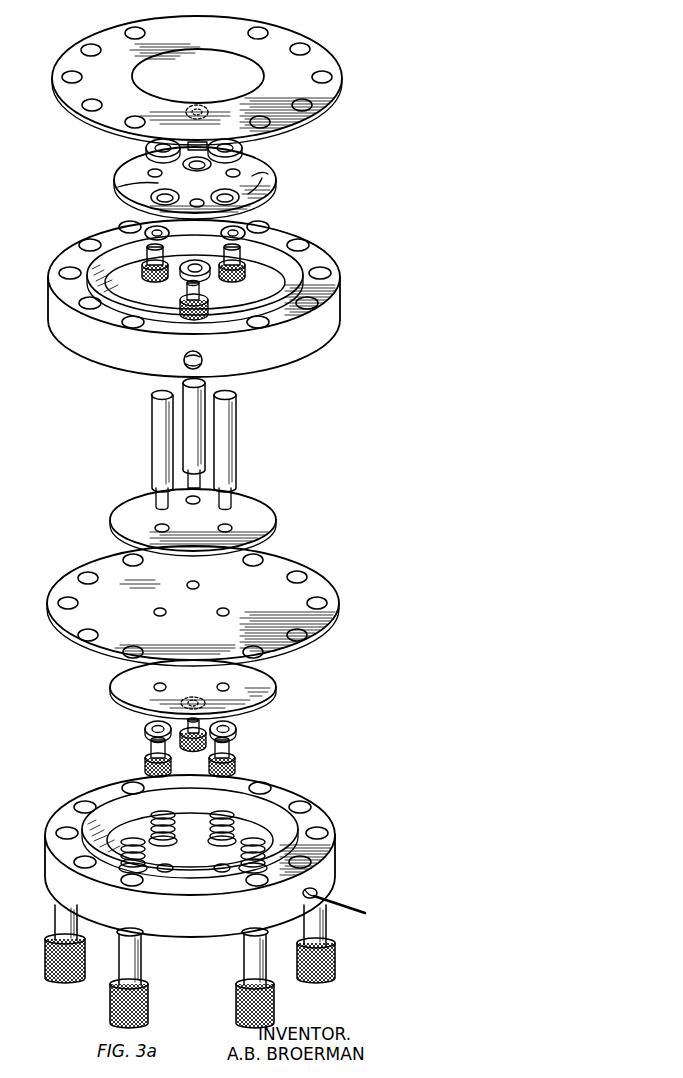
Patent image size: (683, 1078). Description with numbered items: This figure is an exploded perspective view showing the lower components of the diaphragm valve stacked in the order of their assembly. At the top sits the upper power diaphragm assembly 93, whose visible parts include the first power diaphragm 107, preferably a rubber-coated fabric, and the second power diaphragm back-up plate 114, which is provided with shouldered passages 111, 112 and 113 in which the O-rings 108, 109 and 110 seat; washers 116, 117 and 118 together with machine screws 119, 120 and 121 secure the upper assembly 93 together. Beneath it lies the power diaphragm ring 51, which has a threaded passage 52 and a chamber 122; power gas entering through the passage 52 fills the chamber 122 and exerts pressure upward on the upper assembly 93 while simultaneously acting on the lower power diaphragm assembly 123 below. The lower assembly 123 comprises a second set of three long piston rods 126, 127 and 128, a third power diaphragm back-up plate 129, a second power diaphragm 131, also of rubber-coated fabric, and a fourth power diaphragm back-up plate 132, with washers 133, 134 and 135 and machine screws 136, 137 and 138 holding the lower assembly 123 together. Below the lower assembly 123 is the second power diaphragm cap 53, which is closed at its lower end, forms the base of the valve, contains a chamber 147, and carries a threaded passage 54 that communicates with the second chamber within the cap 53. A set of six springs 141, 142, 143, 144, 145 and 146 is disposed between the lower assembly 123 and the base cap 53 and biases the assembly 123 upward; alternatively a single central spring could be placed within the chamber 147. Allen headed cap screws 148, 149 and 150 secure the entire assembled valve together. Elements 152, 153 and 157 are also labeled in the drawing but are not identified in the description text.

The upper power diaphragm assembly 93 is at (70, 42).
The first power diaphragm 107 is at (322, 114).
The O-ring 108 is at (146, 151).
The O-ring 109 is at (212, 84).
The O-ring 110 is at (243, 149).
The shouldered passage 111 is at (118, 185).
The shouldered passage 112 is at (219, 169).
The shouldered passage 113 is at (265, 178).
The second power diaphragm back-up plate 114 is at (276, 181).
The washer 116 is at (205, 240).
The washer 117 is at (148, 227).
The washer 118 is at (246, 229).
The machine screw 119 is at (202, 288).
The machine screw 120 is at (78, 245).
The machine screw 121 is at (310, 246).
The chamber 122 is at (165, 305).
The power diaphragm ring 51 is at (340, 288).
The threaded passage 52 is at (182, 359).
The lower power diaphragm assembly 123 is at (80, 557).
The long piston rod 126 is at (152, 408).
The long piston rod 127 is at (206, 389).
The long piston rod 128 is at (237, 413).
The third power diaphragm back-up plate 129 is at (277, 517).
The second power diaphragm 131 is at (335, 621).
The fourth power diaphragm back-up plate 132 is at (274, 682).
The washer 133 is at (146, 726).
The washer 134 is at (204, 677).
The washer 135 is at (236, 727).
The machine screw 136 is at (146, 764).
The machine screw 137 is at (193, 748).
The machine screw 138 is at (235, 763).
The spring 141 is at (230, 872).
The spring 142 is at (154, 872).
The spring 143 is at (76, 809).
The spring 144 is at (150, 814).
The spring 145 is at (240, 813).
The spring 146 is at (311, 808).
The chamber 147 is at (203, 861).
The Allen headed cap screw 148 is at (238, 984).
The Allen headed cap screw 149 is at (145, 962).
The Allen headed cap screw 150 is at (60, 984).
The collar 152 is at (243, 938).
The knurled leg post 153 is at (333, 962).
The collar 157 is at (118, 940).
The second power diaphragm cap 53 is at (337, 870).
The threaded passage 54 is at (330, 893).